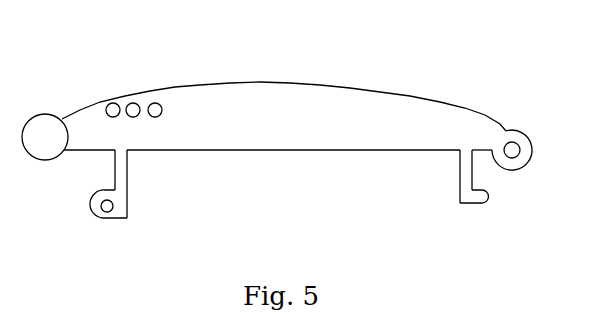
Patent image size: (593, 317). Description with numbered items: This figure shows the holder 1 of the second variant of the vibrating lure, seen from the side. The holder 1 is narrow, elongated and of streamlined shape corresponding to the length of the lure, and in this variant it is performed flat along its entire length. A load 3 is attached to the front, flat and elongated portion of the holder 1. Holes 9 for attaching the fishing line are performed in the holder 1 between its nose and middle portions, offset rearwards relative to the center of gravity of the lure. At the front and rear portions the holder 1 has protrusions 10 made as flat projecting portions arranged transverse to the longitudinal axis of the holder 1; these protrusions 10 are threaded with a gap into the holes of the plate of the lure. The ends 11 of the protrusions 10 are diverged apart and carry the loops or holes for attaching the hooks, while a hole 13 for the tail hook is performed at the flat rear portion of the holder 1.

The holder 1 is at (302, 137).
The load 3 is at (47, 122).
The holes for the fishing line 9 is at (133, 104).
The protrusions 10 is at (127, 170).
The ends of protrusions 11 is at (105, 218).
The hole for the tail hook 13 is at (512, 148).